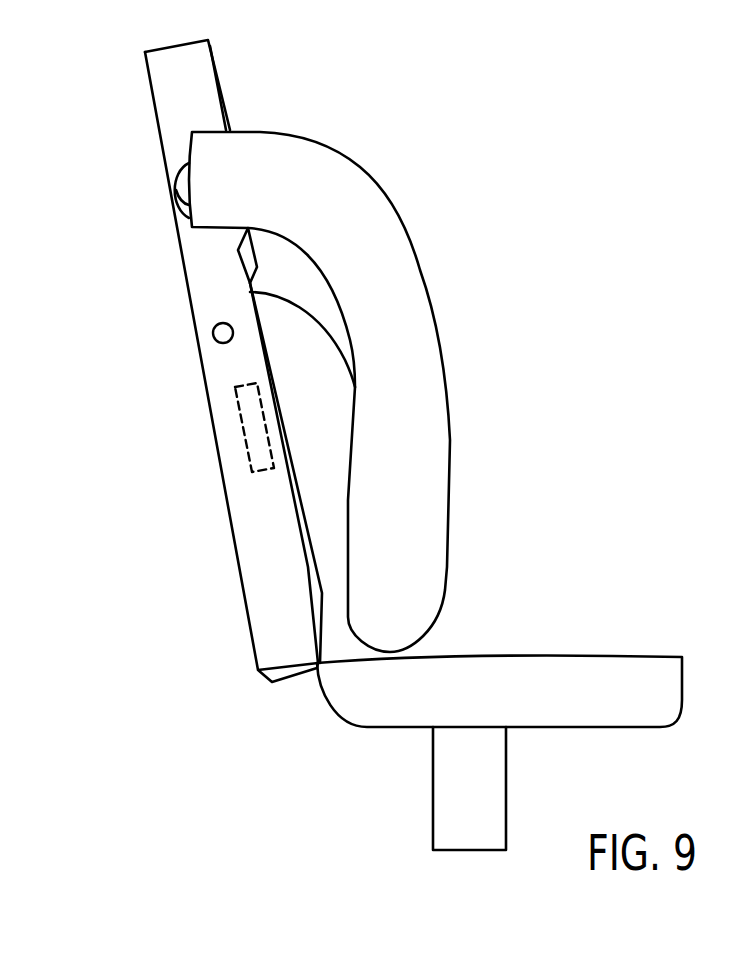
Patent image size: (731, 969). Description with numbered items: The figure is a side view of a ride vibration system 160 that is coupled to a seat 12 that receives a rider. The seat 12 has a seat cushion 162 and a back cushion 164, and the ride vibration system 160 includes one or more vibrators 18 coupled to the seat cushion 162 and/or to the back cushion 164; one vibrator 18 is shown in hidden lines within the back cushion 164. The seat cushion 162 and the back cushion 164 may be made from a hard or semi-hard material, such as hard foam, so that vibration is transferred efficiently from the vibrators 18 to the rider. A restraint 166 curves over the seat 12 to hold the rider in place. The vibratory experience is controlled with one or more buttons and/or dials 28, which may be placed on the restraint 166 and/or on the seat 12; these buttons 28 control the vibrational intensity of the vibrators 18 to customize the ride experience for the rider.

The seat 12 is at (178, 545).
The vibrator 18 is at (253, 423).
The button 28 is at (217, 325).
The ride vibration system 160 is at (513, 215).
The seat cushion 162 is at (597, 705).
The back cushion 164 is at (265, 610).
The restraint 166 is at (340, 187).